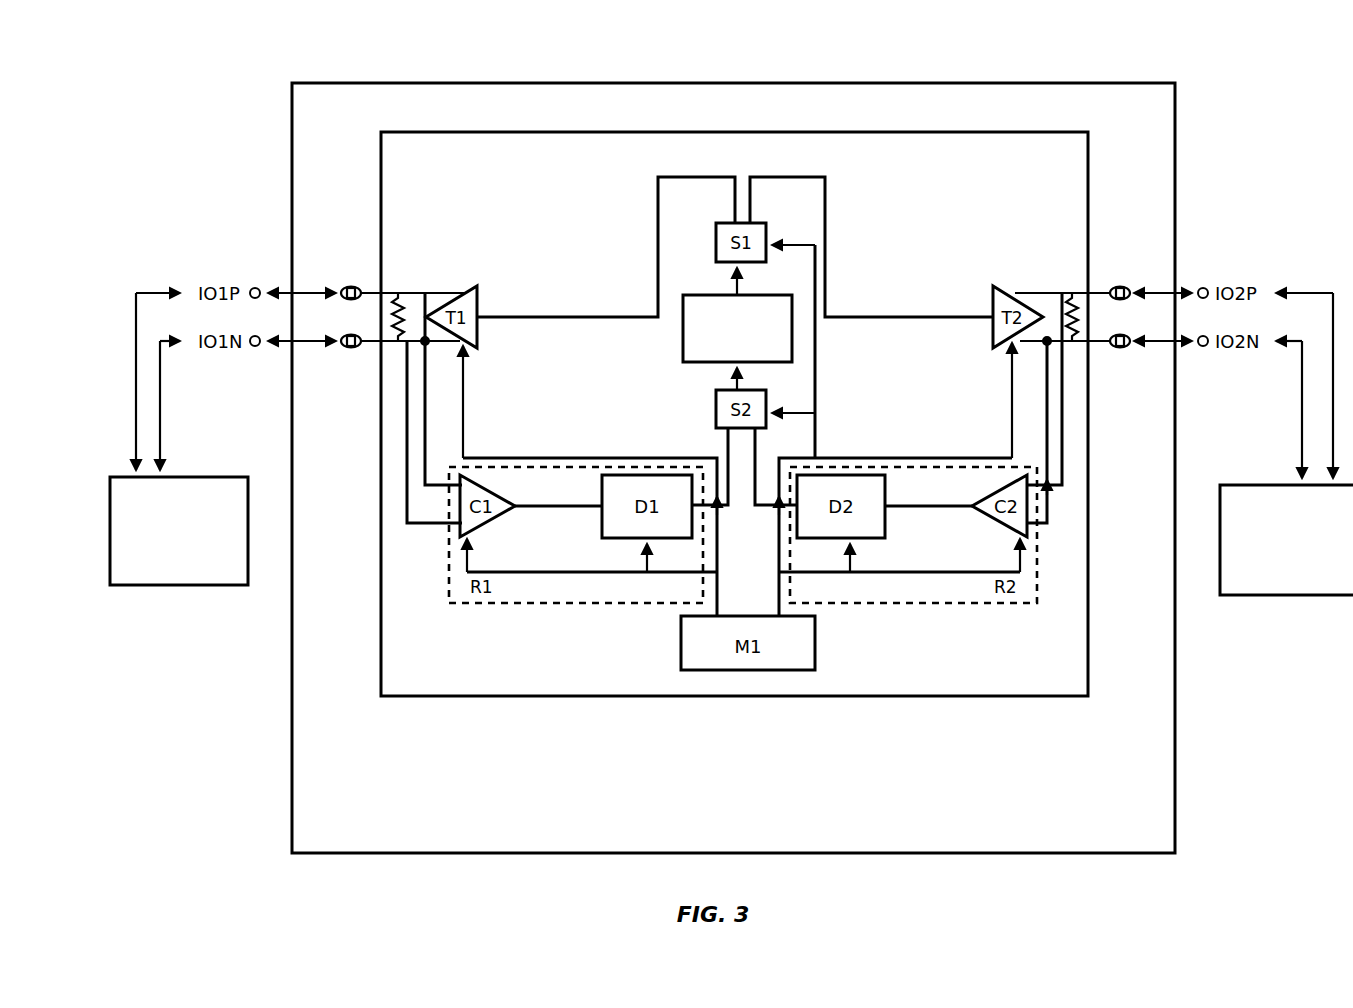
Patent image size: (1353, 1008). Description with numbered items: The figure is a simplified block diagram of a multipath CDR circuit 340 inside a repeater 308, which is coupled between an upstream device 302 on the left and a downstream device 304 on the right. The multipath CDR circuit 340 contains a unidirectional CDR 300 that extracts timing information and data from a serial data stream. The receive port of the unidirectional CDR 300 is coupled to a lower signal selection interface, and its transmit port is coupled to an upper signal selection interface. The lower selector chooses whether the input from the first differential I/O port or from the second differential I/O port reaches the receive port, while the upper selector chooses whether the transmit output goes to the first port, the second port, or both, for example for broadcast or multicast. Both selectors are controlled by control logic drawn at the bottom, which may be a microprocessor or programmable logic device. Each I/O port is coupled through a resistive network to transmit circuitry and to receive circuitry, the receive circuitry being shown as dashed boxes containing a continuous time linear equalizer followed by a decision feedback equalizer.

The repeater 308 is at (292, 83).
The multipath CDR circuit 340 is at (734, 414).
The unidirectional CDR 300 is at (737, 328).
The upstream device 302 is at (179, 531).
The downstream device 304 is at (1286, 540).